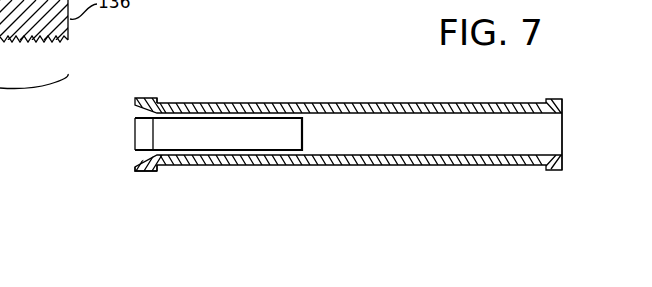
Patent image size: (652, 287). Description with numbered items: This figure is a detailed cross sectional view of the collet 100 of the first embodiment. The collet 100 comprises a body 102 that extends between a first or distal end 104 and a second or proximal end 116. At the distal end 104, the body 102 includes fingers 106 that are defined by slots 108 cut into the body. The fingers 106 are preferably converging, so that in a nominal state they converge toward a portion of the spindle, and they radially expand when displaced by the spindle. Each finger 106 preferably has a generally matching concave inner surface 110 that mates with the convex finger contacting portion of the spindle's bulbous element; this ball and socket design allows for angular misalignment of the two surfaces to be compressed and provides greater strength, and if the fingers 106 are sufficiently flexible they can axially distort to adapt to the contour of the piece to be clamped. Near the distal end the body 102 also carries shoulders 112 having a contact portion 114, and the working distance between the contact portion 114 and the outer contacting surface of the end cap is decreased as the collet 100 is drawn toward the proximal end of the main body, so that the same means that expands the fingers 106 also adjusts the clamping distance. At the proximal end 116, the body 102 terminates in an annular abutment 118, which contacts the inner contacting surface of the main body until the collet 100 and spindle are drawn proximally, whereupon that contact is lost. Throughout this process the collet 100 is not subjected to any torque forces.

The collet 100 is at (289, 99).
The body 102 is at (392, 103).
The first or distal end 104 is at (137, 168).
The fingers 106 is at (193, 133).
The slots 108 is at (300, 150).
The concave inner surface 110 is at (142, 162).
The shoulders 112 is at (150, 100).
The contact portion 114 is at (160, 105).
The second or proximal end 116 is at (563, 130).
The annular abutment 118 is at (557, 100).